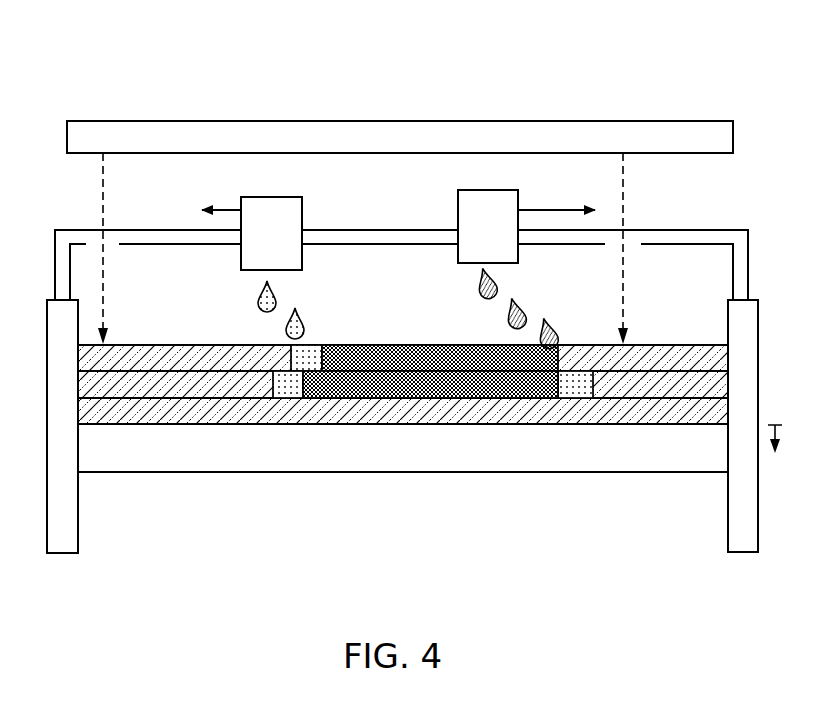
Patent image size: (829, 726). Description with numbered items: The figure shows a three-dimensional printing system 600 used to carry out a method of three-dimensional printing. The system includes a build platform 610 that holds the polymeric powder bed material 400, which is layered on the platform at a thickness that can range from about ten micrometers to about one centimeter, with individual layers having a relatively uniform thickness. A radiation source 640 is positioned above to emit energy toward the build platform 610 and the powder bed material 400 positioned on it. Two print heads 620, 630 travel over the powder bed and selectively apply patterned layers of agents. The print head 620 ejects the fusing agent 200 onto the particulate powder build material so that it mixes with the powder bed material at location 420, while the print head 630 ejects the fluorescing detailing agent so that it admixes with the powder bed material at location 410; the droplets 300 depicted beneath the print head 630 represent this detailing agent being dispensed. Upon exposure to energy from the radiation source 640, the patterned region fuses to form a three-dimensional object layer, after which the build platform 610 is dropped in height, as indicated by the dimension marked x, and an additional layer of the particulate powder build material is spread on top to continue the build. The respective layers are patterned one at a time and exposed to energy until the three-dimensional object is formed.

The three-dimensional printing system 600 is at (118, 86).
The radiation source 640 is at (400, 137).
The print head 630 is at (252, 233).
The print head 620 is at (526, 226).
The build platform 610 is at (147, 450).
The powder bed material 400 is at (173, 383).
The location 410 is at (287, 385).
The location 420 is at (473, 358).
The first droplets 300 is at (261, 298).
The fusing agent 200 is at (478, 287).